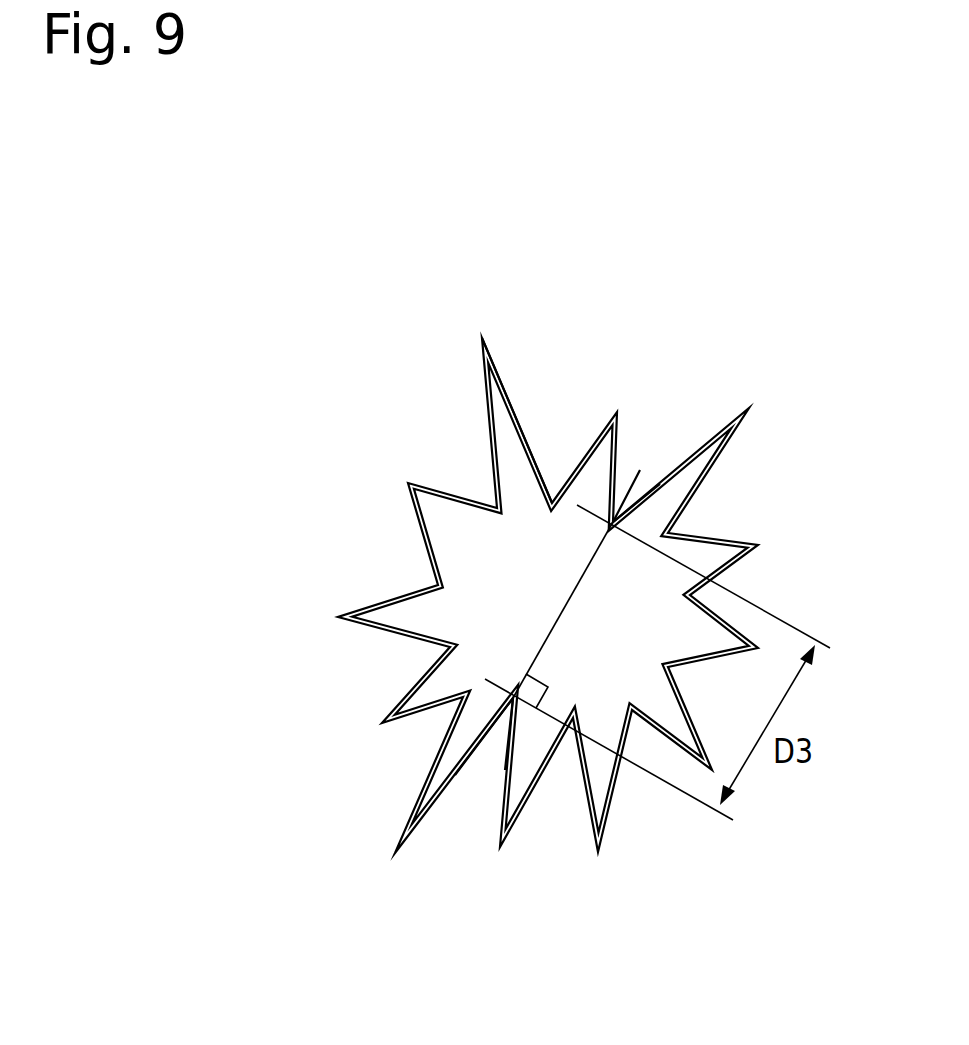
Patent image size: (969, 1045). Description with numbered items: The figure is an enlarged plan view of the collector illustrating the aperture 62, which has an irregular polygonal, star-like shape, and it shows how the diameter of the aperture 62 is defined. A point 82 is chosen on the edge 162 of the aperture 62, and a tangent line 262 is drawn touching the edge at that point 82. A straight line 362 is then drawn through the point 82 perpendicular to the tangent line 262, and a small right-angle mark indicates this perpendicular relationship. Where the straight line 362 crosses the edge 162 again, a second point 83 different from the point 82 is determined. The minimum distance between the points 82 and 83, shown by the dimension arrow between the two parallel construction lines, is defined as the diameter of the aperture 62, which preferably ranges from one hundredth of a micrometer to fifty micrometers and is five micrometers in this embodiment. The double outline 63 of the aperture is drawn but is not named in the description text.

The aperture 62 is at (458, 627).
The wall of toothed element 63 is at (490, 448).
The edge 162 is at (540, 467).
The point 83 is at (613, 522).
The straight line 362 is at (557, 620).
The point 82 is at (513, 698).
The tangent line 262 is at (685, 806).